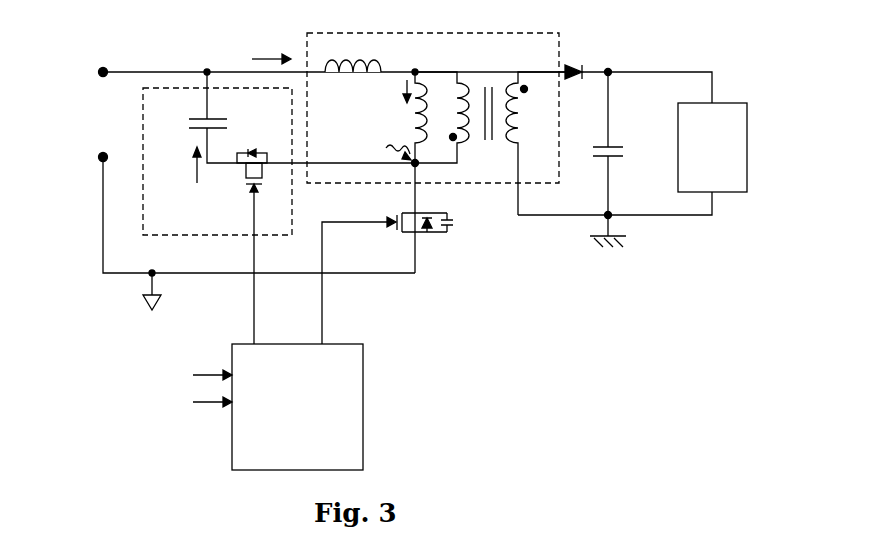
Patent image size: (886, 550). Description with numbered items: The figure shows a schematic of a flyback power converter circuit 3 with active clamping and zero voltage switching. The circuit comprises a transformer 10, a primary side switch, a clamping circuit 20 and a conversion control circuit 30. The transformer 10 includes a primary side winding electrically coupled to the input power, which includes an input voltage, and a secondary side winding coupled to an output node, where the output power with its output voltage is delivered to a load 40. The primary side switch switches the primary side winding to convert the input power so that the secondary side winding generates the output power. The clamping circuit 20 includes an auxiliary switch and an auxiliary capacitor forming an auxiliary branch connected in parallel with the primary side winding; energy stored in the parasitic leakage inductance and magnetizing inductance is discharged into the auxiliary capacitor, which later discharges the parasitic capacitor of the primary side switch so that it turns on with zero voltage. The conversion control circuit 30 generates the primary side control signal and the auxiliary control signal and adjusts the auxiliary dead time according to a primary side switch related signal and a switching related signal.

The flyback power converter circuit 3 is at (78, 32).
The transformer 10 is at (553, 53).
The clamping circuit 20 is at (178, 222).
The conversion control circuit 30 is at (308, 459).
The load 40 is at (723, 181).